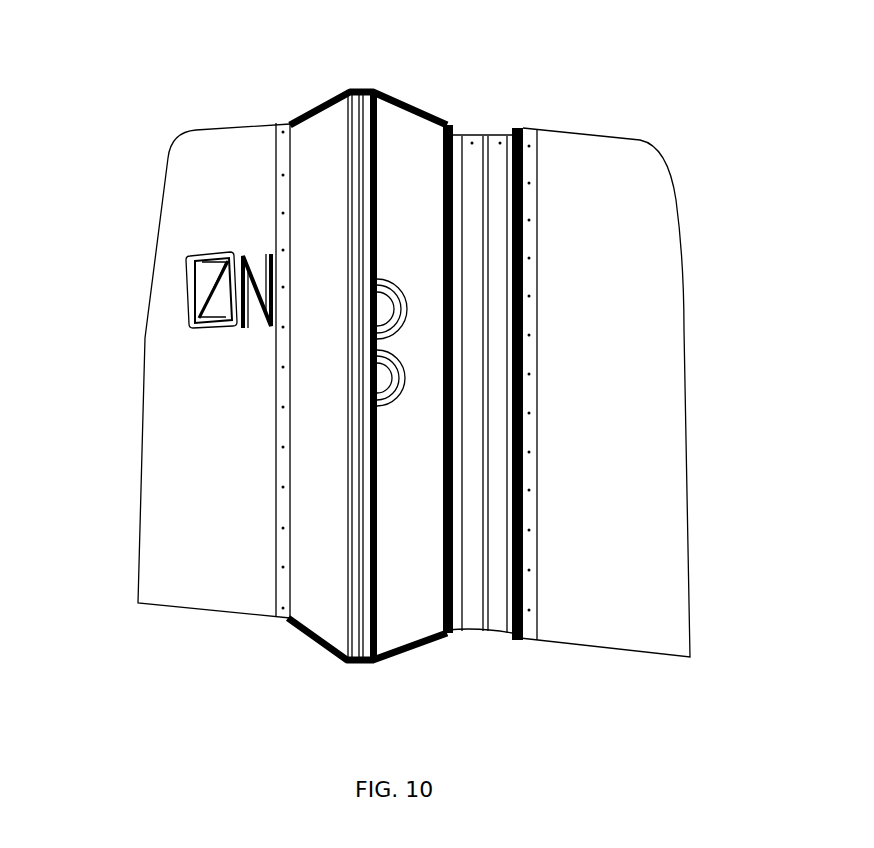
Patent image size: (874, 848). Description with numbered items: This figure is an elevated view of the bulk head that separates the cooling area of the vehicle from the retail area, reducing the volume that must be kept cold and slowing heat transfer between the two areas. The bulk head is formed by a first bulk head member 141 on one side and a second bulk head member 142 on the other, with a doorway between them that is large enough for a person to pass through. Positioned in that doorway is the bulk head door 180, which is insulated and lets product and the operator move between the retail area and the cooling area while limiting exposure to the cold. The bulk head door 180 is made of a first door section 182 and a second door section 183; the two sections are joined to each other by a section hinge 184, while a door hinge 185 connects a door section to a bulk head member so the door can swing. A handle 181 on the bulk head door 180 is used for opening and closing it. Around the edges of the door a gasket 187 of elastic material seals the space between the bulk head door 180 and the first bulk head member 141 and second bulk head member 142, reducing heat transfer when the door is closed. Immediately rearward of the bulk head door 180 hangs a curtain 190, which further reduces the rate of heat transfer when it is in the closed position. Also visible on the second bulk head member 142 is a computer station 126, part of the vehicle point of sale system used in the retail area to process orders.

The computer station 126 is at (197, 295).
The first bulk head member 141 is at (653, 253).
The second bulk head member 142 is at (197, 224).
The bulk head door 180 is at (392, 371).
The handle 181 is at (377, 388).
The first door section 182 is at (403, 137).
The second door section 183 is at (315, 147).
The section hinge 184 is at (365, 92).
The door hinge 185 is at (287, 187).
The gasket 187 is at (318, 107).
The curtain 190 is at (470, 510).